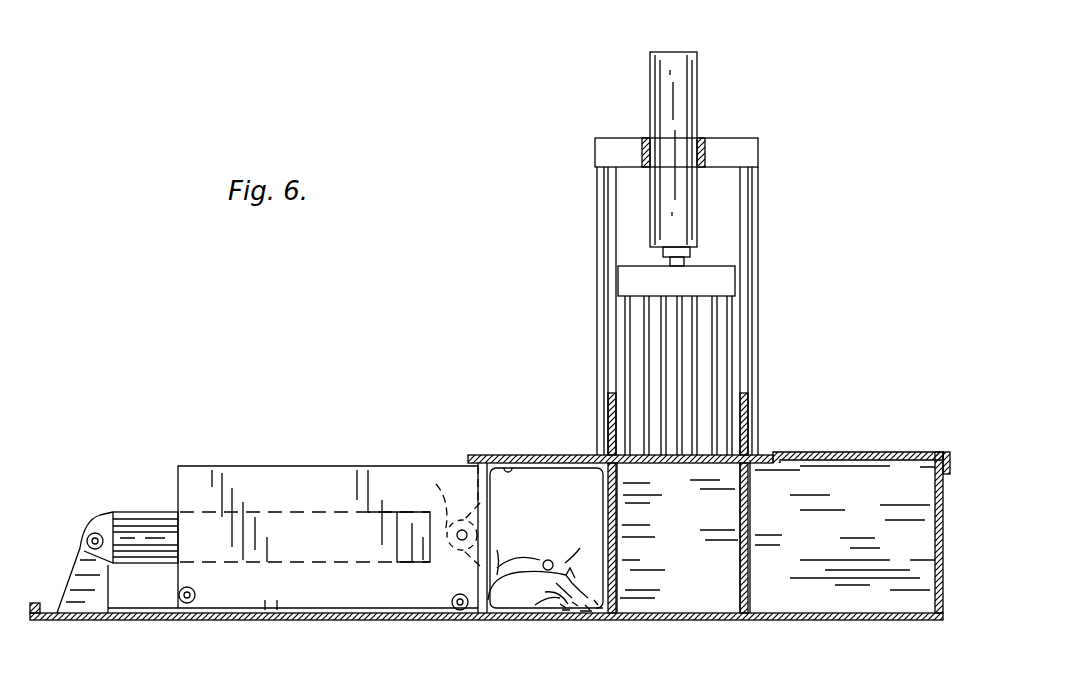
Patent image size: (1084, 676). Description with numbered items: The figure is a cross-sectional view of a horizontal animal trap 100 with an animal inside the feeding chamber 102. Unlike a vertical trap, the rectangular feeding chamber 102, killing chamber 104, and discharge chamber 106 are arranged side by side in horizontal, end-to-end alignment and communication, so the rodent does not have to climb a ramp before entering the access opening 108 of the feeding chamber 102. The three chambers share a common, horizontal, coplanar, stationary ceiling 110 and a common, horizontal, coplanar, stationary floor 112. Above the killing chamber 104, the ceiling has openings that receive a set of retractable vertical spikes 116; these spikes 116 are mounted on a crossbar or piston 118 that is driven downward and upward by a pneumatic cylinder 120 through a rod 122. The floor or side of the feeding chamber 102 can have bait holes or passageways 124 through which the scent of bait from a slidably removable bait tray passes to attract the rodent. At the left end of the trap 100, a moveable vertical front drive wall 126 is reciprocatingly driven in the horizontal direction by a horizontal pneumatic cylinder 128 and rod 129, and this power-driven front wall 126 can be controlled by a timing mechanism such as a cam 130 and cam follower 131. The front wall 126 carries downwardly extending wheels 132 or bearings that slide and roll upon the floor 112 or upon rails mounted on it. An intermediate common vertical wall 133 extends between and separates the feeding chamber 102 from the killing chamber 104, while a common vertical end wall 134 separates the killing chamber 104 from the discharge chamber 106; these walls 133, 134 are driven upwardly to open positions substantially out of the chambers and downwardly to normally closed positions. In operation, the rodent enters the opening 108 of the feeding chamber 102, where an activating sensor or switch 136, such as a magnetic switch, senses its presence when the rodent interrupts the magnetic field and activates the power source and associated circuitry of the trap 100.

The horizontal animal trap 100 is at (358, 426).
The feeding chamber 102 is at (503, 470).
The killing chamber 104 is at (700, 506).
The discharge chamber 106 is at (862, 508).
The access opening 108 is at (598, 498).
The ceiling 110 is at (556, 456).
The floor 112 is at (660, 626).
The retractable vertical spikes 116 is at (714, 356).
The crossbar or piston 118 is at (705, 282).
The pneumatic cylinder 120 is at (674, 98).
The rod 122 is at (676, 264).
The bait holes or passageways 124 is at (588, 613).
The front drive wall 126 is at (488, 548).
The horizontal pneumatic cylinder 128 is at (142, 528).
The rod 129 is at (447, 517).
The cam 130 is at (168, 613).
The cam follower 131 is at (198, 596).
The wheels 132 is at (452, 599).
The intermediate common vertical wall 133 is at (680, 540).
The common vertical end wall 134 is at (817, 543).
The activating sensor or switch 136 is at (553, 558).